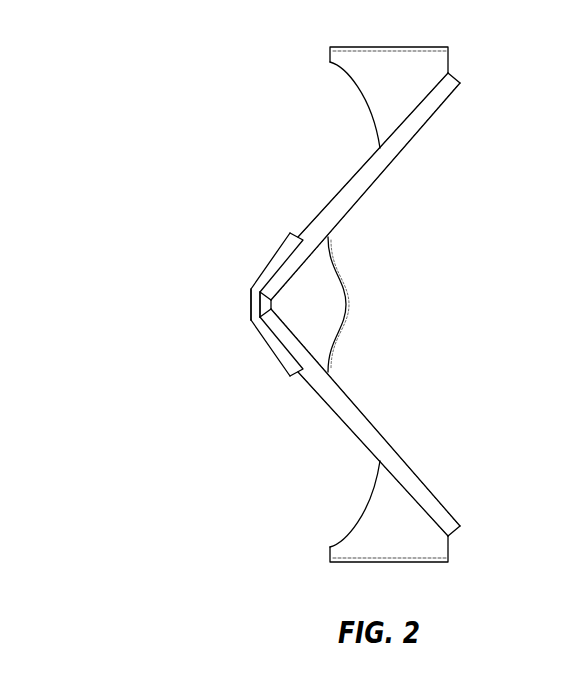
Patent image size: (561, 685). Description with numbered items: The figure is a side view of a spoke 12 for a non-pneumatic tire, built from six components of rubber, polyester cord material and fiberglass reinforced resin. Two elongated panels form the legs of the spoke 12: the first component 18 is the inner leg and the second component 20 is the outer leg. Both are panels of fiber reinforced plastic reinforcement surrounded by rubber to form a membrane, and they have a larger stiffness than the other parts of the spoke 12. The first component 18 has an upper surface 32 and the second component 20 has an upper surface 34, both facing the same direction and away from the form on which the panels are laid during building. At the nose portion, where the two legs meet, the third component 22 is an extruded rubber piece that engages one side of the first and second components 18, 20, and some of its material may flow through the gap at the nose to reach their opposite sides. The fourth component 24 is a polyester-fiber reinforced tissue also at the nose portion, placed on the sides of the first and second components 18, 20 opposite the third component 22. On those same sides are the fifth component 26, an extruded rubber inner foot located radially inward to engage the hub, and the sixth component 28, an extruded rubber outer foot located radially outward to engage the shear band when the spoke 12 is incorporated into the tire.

The spoke 12 is at (148, 66).
The first component 18 is at (373, 170).
The second component 20 is at (373, 438).
The third component 22 is at (333, 305).
The fourth component 24 is at (250, 302).
The fifth component 26 is at (343, 74).
The sixth component 28 is at (353, 527).
The upper surface 32 is at (334, 193).
The upper surface 34 is at (334, 416).